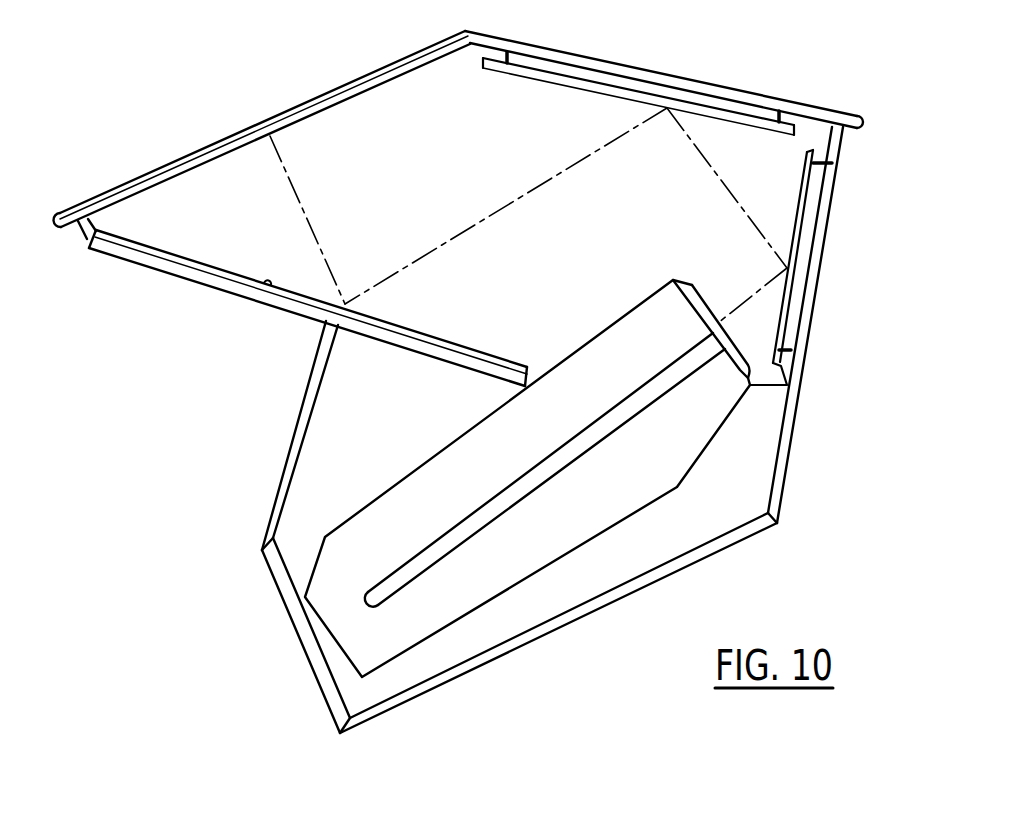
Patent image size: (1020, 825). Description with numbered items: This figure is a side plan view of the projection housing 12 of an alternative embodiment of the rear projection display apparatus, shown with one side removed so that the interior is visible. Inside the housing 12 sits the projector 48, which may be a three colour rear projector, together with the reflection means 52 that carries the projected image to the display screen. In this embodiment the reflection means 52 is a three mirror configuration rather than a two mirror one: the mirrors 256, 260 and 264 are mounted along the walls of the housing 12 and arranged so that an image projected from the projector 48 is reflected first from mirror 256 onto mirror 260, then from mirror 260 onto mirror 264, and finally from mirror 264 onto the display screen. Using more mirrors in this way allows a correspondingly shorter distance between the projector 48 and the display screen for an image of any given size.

The projection housing 12 is at (818, 367).
The projector 48 is at (550, 546).
The reflection means 52 is at (684, 217).
The mirror 256 is at (803, 242).
The mirror 260 is at (640, 93).
The mirror 264 is at (267, 284).